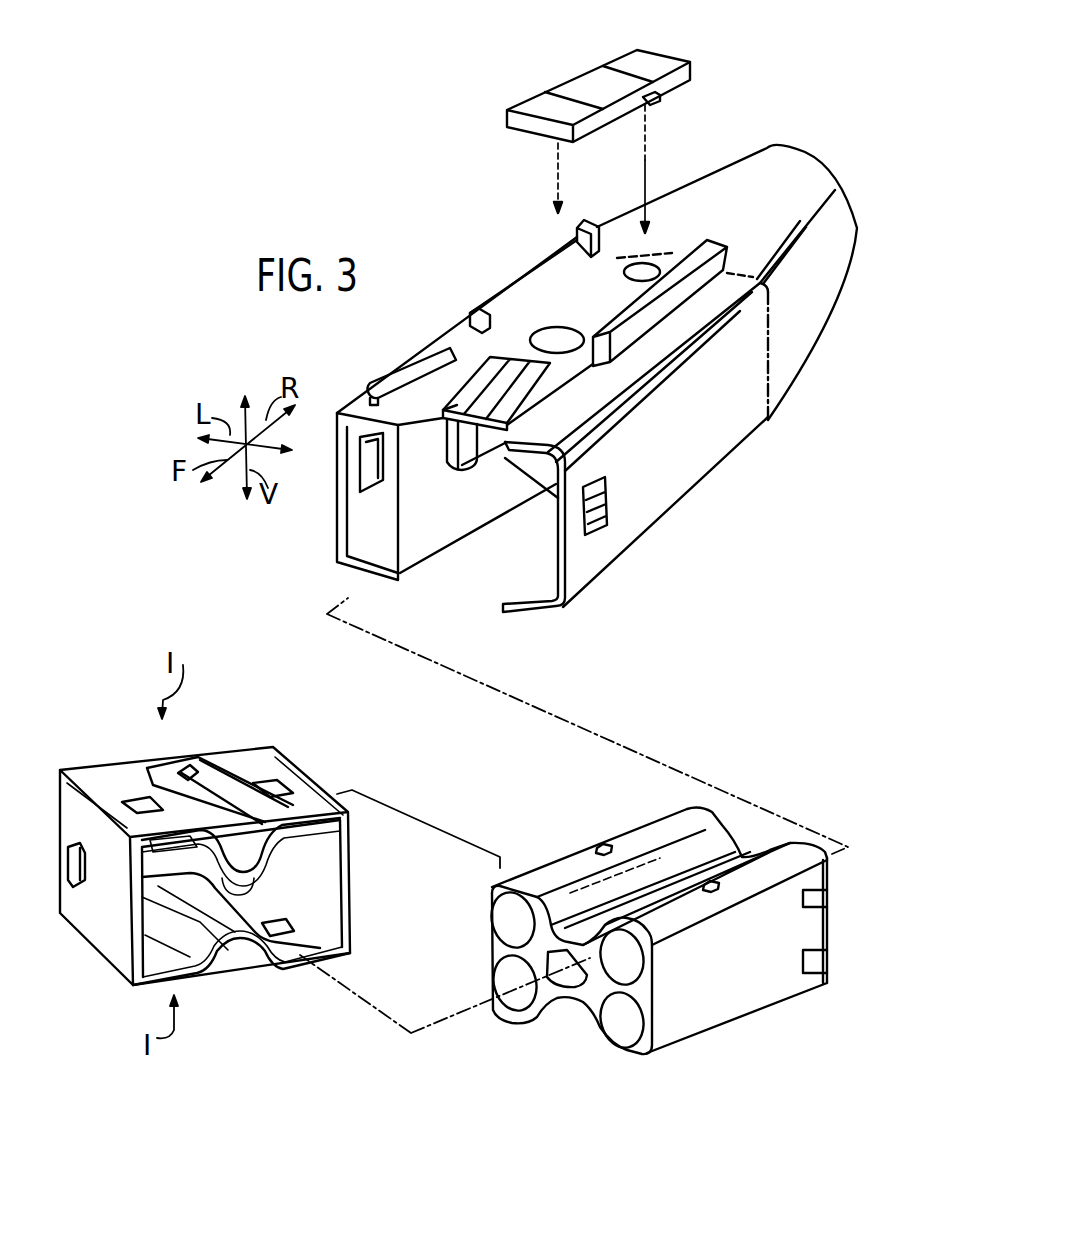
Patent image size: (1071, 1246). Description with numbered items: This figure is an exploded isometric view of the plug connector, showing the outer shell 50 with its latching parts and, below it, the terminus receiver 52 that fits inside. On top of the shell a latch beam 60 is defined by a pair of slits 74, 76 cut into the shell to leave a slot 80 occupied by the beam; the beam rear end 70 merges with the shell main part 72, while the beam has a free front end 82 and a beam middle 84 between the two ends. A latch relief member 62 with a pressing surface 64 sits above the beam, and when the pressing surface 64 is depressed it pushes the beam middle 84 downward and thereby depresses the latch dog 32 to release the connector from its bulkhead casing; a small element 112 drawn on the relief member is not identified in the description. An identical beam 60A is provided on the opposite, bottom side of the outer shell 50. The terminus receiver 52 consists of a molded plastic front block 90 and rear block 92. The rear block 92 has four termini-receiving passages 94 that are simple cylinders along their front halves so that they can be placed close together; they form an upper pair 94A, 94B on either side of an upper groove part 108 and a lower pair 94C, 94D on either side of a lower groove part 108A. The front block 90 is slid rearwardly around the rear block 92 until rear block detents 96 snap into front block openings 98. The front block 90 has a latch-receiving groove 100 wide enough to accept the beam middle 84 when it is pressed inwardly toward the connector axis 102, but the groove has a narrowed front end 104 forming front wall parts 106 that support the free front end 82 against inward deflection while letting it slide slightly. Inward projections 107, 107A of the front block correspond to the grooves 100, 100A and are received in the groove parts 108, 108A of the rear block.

The latch dog 32 is at (457, 400).
The outer shell 50 is at (707, 480).
The terminus receiver 52 is at (440, 830).
The beam 60 is at (556, 301).
The beam 60A is at (505, 530).
The latch relief member 62 is at (576, 84).
The pressing surface 64 is at (540, 103).
The beam rear end 70 is at (605, 290).
The shell main part 72 is at (657, 513).
The slit 74 is at (432, 426).
The slit 76 is at (523, 421).
The slot 80 is at (478, 435).
The free front end 82 is at (455, 403).
The beam middle 84 is at (523, 352).
The front block 90 is at (102, 767).
The rear block 92 is at (551, 858).
The termini-receiving passages 94 is at (597, 1037).
The passage 94A is at (508, 925).
The passage 94B is at (630, 960).
The passage 94C is at (508, 979).
The passage 94D is at (630, 1025).
The detents 96 is at (605, 846).
The openings 98 is at (140, 800).
The latch-receiving groove 100 is at (233, 793).
The groove 100A is at (220, 962).
The axis 102 is at (328, 610).
The narrowed front end 104 is at (190, 775).
The front wall parts 106 is at (183, 773).
The inward projection 107 is at (267, 853).
The inward projection 107A is at (287, 950).
The groove part 108 is at (657, 866).
The groove part 108A is at (563, 1017).
The latch portion 112 is at (612, 66).